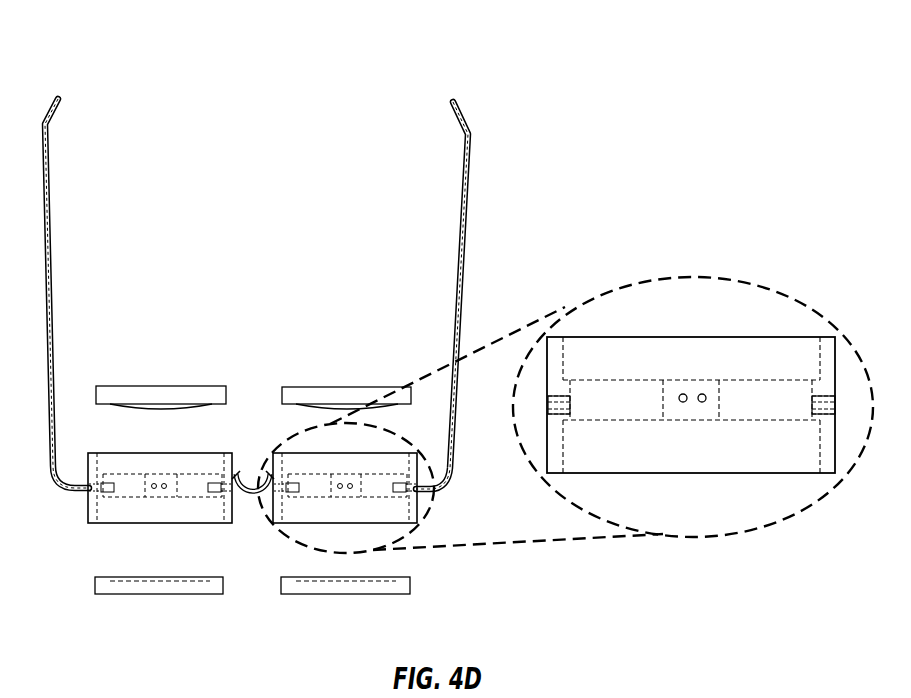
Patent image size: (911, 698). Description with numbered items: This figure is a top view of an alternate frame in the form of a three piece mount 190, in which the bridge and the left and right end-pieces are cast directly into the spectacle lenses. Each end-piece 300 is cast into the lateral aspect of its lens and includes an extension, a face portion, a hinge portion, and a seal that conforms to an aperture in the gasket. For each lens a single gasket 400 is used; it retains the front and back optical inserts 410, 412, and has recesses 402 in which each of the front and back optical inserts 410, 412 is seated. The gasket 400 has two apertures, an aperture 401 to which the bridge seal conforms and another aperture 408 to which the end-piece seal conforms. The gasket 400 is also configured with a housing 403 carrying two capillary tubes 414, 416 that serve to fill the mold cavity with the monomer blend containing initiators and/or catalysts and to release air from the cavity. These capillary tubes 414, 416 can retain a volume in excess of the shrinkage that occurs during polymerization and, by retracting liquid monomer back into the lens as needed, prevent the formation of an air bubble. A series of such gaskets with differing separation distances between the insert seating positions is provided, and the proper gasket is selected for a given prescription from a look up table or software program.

The three piece mount 190 is at (97, 54).
The end-piece 300 is at (51, 230).
The gasket 400 is at (109, 530).
The aperture 401 is at (553, 422).
The recesses 402 is at (568, 374).
The housing 403 is at (723, 374).
The aperture 408 is at (829, 422).
The front optical insert 410 is at (298, 595).
The back optical insert 412 is at (298, 386).
The capillary tube 414 is at (679, 407).
The capillary tube 416 is at (706, 407).